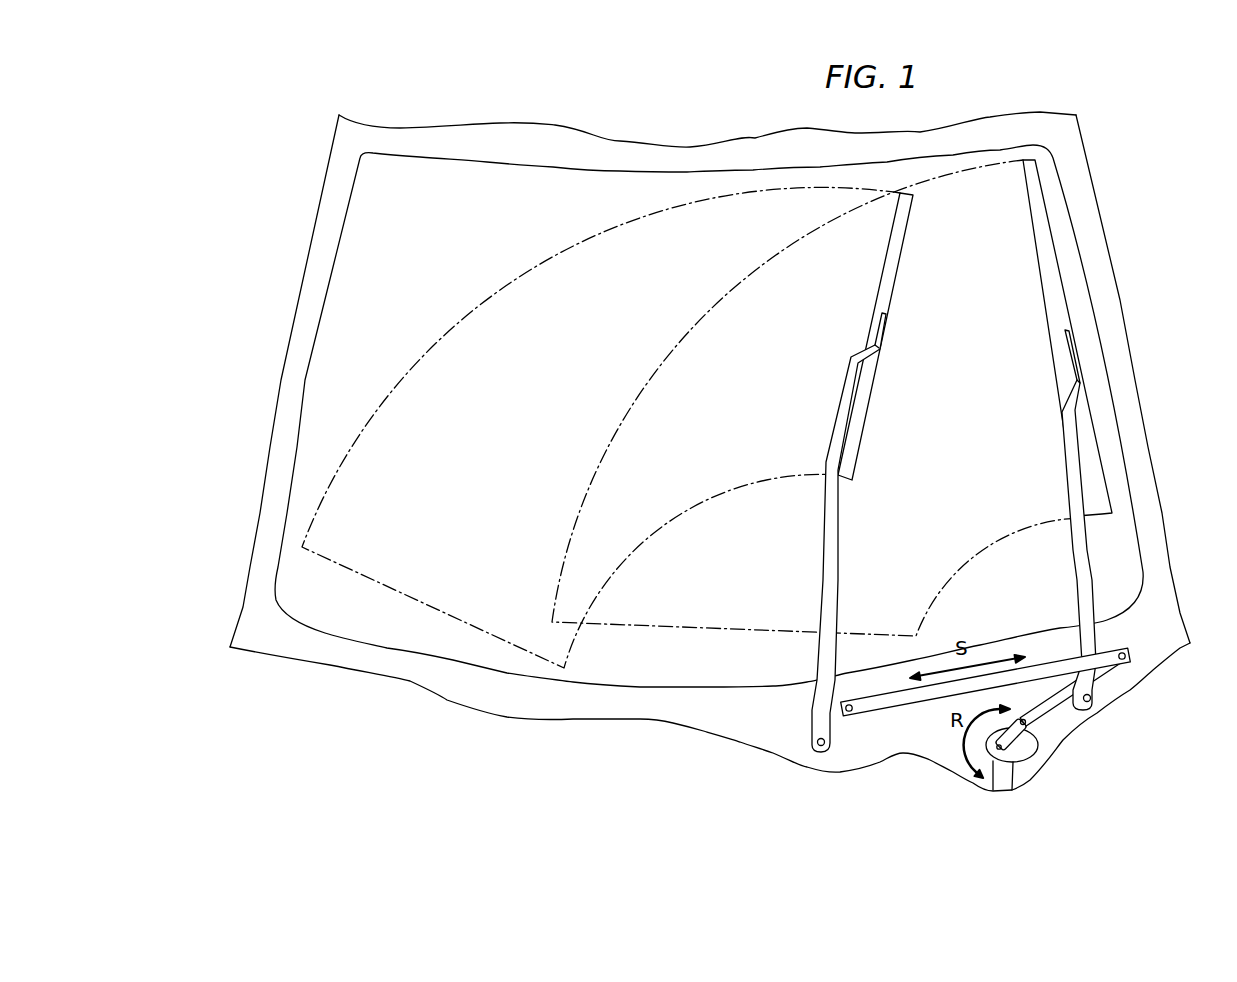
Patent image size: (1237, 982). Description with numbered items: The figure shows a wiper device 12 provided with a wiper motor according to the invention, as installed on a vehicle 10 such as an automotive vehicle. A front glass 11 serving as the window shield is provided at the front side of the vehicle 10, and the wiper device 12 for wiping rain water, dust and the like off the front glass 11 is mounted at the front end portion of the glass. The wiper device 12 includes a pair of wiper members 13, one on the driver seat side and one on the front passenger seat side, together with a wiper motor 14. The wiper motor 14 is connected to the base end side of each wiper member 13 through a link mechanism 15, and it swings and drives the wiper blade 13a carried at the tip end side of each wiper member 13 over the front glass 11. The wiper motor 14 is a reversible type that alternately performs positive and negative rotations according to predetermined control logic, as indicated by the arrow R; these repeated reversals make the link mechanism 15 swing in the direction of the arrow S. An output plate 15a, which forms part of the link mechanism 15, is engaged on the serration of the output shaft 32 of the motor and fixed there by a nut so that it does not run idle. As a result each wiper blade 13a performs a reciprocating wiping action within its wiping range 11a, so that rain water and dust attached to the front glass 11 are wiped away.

The vehicle 10 is at (282, 200).
The front glass 11 is at (362, 337).
The wiping range 11a is at (513, 278).
The wiper device 12 is at (1072, 739).
The wiper member 13 is at (842, 598).
The wiper blade 13a is at (897, 243).
The wiper motor 14 is at (1024, 744).
The link mechanism 15 is at (902, 714).
The output plate 15a is at (1013, 745).
The output shaft 32 is at (997, 754).